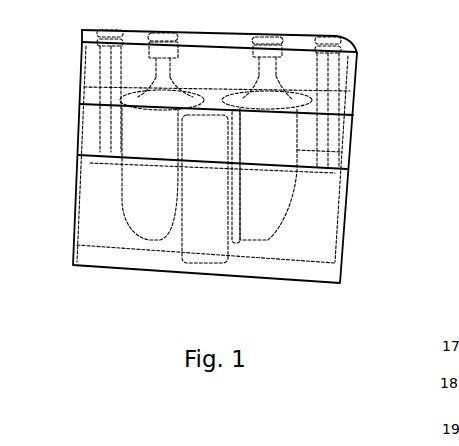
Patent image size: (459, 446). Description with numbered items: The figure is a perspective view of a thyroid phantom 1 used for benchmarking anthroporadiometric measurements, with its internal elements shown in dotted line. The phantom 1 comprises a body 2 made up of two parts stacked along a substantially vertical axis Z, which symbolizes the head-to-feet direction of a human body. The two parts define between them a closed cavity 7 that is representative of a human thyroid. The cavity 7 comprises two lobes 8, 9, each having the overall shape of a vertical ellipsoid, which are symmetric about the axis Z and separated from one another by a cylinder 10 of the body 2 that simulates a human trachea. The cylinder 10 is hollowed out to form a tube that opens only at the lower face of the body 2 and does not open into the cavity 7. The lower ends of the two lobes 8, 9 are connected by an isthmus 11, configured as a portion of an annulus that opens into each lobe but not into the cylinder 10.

The thyroid phantom 1 is at (394, 73).
The body 2 is at (325, 218).
The closed cavity 7 is at (271, 139).
The lobe 8 is at (138, 168).
The lobe 9 is at (253, 218).
The cylinder 10 is at (185, 252).
The isthmus 11 is at (232, 220).